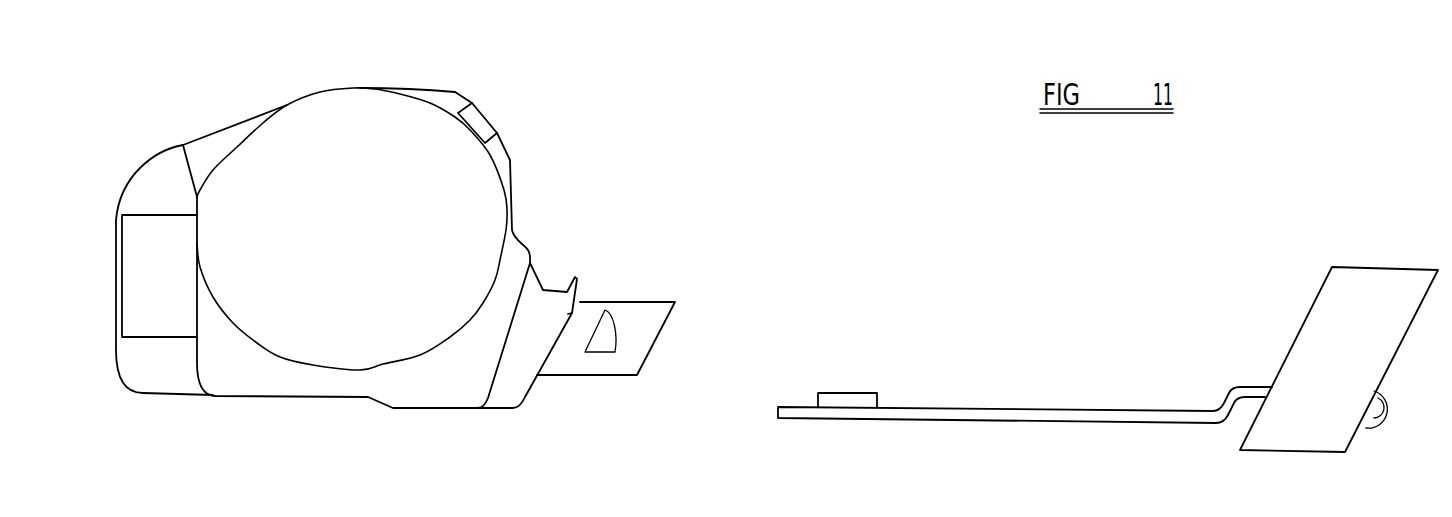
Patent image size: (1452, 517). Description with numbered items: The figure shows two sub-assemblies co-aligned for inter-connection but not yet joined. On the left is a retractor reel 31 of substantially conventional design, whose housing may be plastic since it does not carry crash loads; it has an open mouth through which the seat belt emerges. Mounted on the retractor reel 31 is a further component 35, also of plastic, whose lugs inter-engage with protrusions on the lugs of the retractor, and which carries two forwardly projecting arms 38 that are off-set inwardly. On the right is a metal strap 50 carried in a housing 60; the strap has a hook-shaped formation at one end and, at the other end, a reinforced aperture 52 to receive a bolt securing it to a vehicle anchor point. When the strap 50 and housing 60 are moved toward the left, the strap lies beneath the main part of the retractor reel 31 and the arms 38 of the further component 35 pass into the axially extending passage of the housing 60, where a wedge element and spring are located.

The retractor reel 31 is at (324, 135).
The further component 35 is at (648, 280).
The projecting arms 38 is at (648, 335).
The metal strap 50 is at (1122, 405).
The reinforced aperture 52 is at (867, 393).
The housing 60 is at (1383, 252).